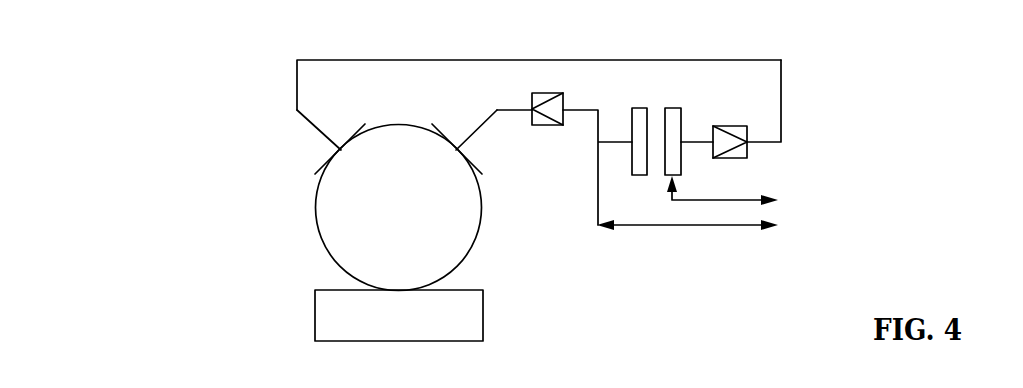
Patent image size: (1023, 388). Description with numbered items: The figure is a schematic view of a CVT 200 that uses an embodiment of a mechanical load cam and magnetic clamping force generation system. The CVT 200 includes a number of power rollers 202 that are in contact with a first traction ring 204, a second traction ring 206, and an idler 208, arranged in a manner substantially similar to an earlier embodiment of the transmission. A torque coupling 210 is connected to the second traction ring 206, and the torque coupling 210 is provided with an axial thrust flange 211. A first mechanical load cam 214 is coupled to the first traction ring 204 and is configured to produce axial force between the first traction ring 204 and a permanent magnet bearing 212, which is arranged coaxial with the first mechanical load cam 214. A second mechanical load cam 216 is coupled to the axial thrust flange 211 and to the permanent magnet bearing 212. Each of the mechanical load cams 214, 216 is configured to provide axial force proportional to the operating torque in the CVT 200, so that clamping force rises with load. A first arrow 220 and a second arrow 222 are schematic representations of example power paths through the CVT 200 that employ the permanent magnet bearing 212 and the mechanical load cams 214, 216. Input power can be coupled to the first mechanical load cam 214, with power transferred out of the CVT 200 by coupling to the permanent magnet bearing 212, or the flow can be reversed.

The CVT 200 is at (124, 95).
The power rollers 202 is at (315, 210).
The first traction ring 204 is at (483, 128).
The second traction ring 206 is at (313, 126).
The idler 208 is at (315, 323).
The torque coupling 210 is at (417, 60).
The axial thrust flange 211 is at (781, 92).
The permanent magnet bearing 212 is at (657, 86).
The first mechanical load cam 214 is at (563, 93).
The second mechanical load cam 216 is at (747, 126).
The first arrow 220 is at (688, 225).
The second arrow 222 is at (740, 200).